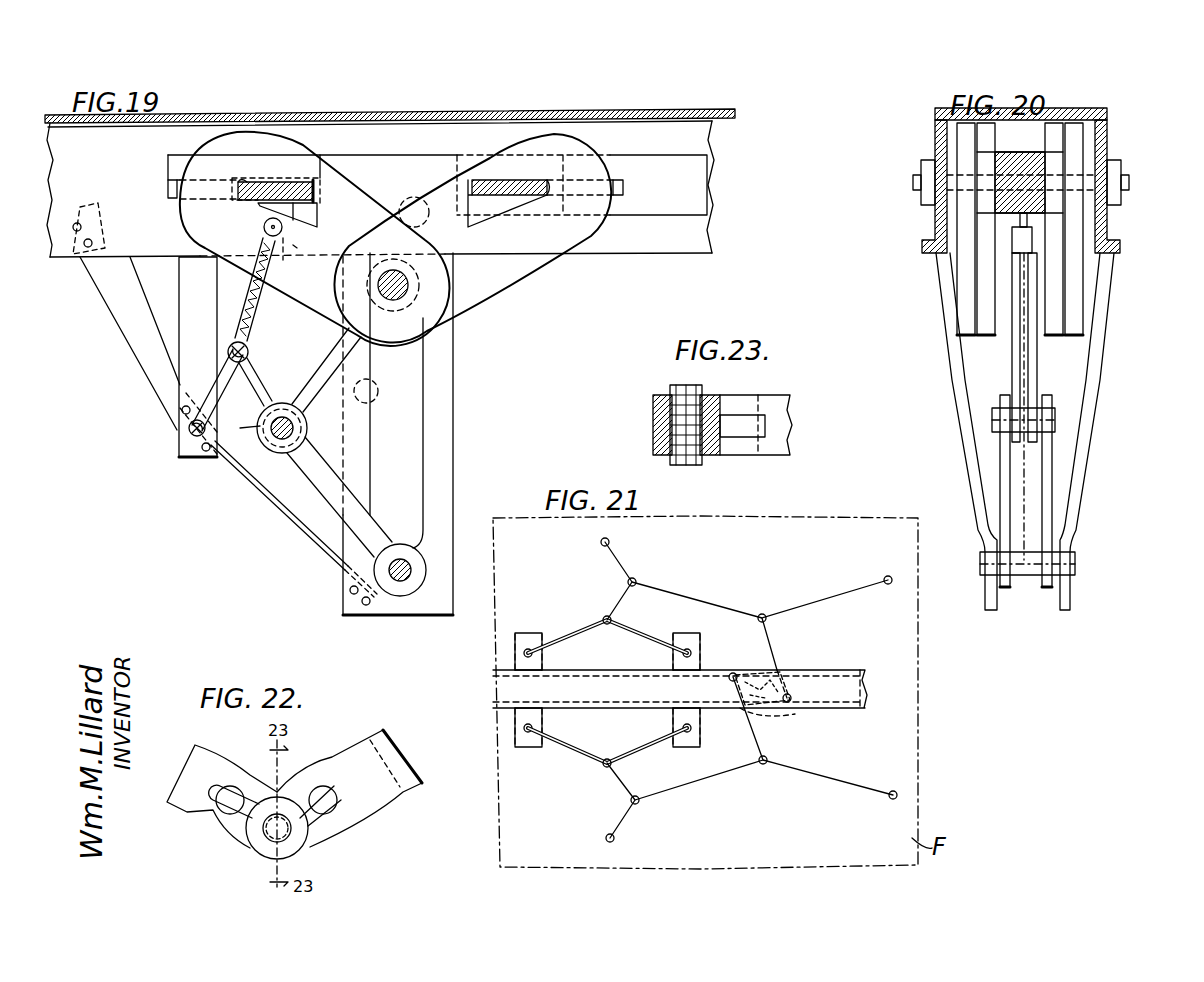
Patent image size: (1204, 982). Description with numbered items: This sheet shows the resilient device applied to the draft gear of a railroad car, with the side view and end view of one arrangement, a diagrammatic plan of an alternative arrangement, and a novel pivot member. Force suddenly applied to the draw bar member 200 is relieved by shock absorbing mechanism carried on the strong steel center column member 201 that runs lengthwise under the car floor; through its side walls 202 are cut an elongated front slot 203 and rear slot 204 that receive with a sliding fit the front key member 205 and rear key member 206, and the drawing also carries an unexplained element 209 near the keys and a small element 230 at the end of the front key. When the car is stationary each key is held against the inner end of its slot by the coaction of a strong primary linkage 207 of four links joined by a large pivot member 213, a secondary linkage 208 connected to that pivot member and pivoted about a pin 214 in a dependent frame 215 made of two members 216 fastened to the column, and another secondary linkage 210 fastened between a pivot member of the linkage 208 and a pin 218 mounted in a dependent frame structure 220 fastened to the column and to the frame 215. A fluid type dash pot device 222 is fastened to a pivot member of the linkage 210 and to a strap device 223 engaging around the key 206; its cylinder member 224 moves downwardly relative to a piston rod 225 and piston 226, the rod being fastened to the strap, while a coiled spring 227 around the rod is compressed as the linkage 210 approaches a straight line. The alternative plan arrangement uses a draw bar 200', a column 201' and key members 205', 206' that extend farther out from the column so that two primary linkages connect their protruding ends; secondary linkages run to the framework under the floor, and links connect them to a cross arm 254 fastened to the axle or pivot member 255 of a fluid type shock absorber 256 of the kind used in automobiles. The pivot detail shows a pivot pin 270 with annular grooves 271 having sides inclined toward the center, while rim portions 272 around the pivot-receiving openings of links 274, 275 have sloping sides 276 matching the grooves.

In FIG. 19, the draw bar member 200 is at (474, 165).
In FIG. 20, the draw bar member 200 is at (1020, 168).
In FIG. 21, the draw bar 200' is at (642, 690).
In FIG. 19, the center column member 201 is at (412, 106).
In FIG. 21, the column 201' is at (865, 652).
In FIG. 19, the side walls 202 is at (700, 243).
In FIG. 20, the side walls 202 is at (1107, 139).
In FIG. 19, the front slot 203 is at (603, 160).
In FIG. 19, the rear slot 204 is at (177, 197).
In FIG. 19, the front key member 205 is at (543, 246).
In FIG. 20, the front key member 205 is at (1050, 182).
In FIG. 21, the key member 205' is at (565, 690).
In FIG. 19, the rear key member 206 is at (293, 145).
In FIG. 21, the key member 206' is at (712, 690).
In FIG. 19, the primary linkage 207 is at (441, 344).
In FIG. 19, the secondary linkage 208 is at (309, 430).
In FIG. 20, the secondary linkage 208 is at (1052, 392).
In FIG. 19, the guide 209 is at (384, 160).
In FIG. 19, the secondary linkage 210 is at (260, 347).
In FIG. 20, the large pivot member 213 is at (987, 247).
In FIG. 19, the pin 214 is at (400, 582).
In FIG. 19, the dependent frame 215 is at (378, 626).
In FIG. 19, the frame members 216 is at (455, 462).
In FIG. 19, the pin 218 is at (181, 458).
In FIG. 19, the dependent frame structure 220 is at (170, 437).
In FIG. 19, the fluid type dash pot device 222 is at (235, 292).
In FIG. 19, the strap device 223 is at (322, 160).
In FIG. 19, the cylinder member 224 is at (280, 262).
In FIG. 19, the piston rod 225 is at (243, 296).
In FIG. 19, the piston 226 is at (240, 320).
In FIG. 19, the coiled spring 227 is at (258, 243).
In FIG. 19, the pin 230 is at (623, 187).
In FIG. 21, the cross arm 254 is at (800, 711).
In FIG. 21, the axle or pivot member 255 is at (748, 712).
In FIG. 21, the fluid type shock absorber 256 is at (778, 668).
In FIG. 23, the pivot pin 270 is at (678, 392).
In FIG. 22, the pivot pin 270 is at (285, 833).
In FIG. 23, the annular grooves 271 is at (722, 415).
In FIG. 22, the rim portions 272 is at (263, 840).
In FIG. 22, the link 274 is at (385, 762).
In FIG. 22, the link 275 is at (190, 767).
In FIG. 23, the sloping sides 276 is at (655, 440).